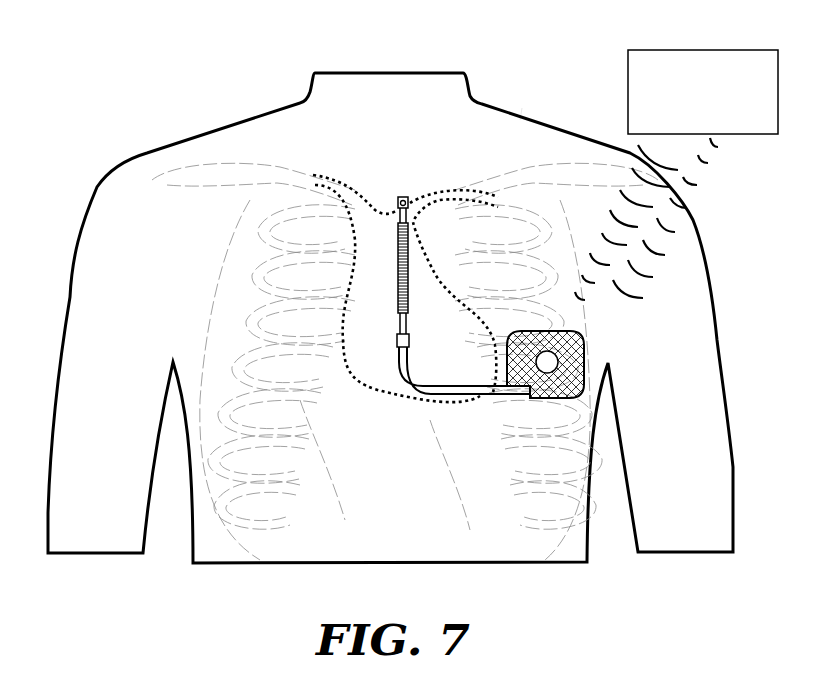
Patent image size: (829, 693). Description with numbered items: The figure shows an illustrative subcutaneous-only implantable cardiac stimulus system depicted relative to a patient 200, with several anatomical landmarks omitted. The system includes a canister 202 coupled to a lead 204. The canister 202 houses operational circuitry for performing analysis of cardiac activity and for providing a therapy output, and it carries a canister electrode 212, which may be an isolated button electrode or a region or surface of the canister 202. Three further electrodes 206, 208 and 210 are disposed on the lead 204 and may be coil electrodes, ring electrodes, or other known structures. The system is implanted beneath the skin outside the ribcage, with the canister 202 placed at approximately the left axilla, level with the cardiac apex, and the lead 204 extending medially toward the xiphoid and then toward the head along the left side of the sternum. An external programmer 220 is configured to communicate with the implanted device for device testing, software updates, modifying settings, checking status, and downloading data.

The patient 200 is at (520, 120).
The canister 202 is at (572, 347).
The lead 204 is at (462, 398).
The electrode 206 is at (397, 341).
The electrode 208 is at (398, 276).
The electrode 210 is at (399, 200).
The canister electrode 212 is at (558, 358).
The external programmer 220 is at (705, 68).